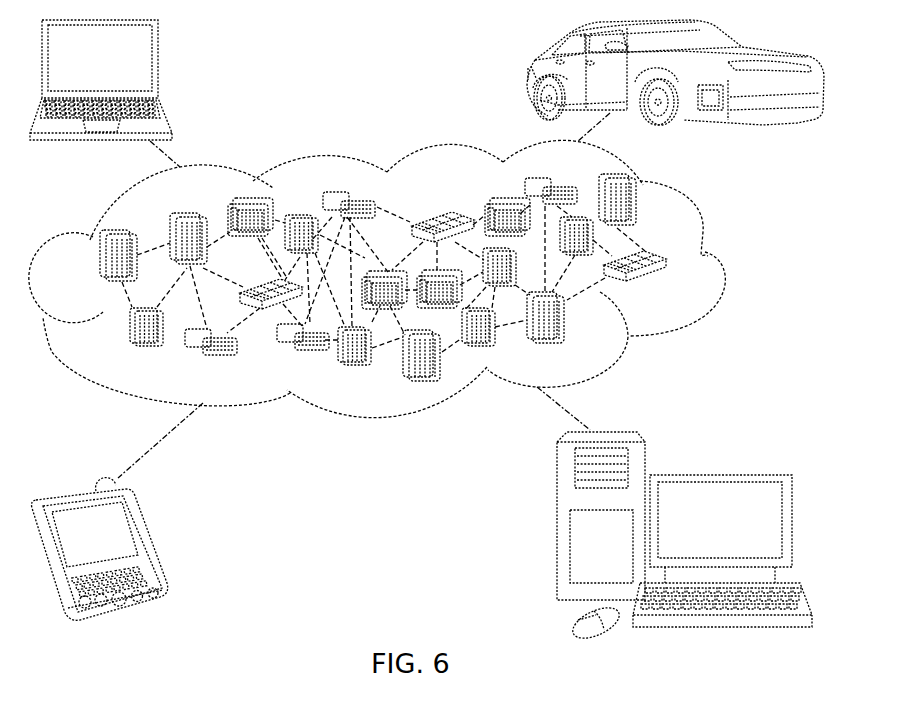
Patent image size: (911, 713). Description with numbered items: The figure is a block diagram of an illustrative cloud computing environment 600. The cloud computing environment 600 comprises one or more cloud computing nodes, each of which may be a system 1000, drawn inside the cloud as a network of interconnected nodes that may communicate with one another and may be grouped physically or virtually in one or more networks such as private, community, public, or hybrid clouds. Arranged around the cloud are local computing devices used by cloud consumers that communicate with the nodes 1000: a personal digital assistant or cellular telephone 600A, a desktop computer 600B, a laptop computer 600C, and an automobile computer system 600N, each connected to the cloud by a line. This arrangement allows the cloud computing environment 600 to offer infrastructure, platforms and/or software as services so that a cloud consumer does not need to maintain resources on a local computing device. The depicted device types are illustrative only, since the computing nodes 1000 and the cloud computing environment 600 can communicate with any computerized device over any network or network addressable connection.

The cloud computing environment 600 is at (718, 266).
The system 1000 is at (668, 285).
The personal digital assistant or cellular telephone 600A is at (149, 541).
The desktop computer 600B is at (718, 472).
The laptop computer 600C is at (160, 64).
The automobile computer system 600N is at (533, 75).